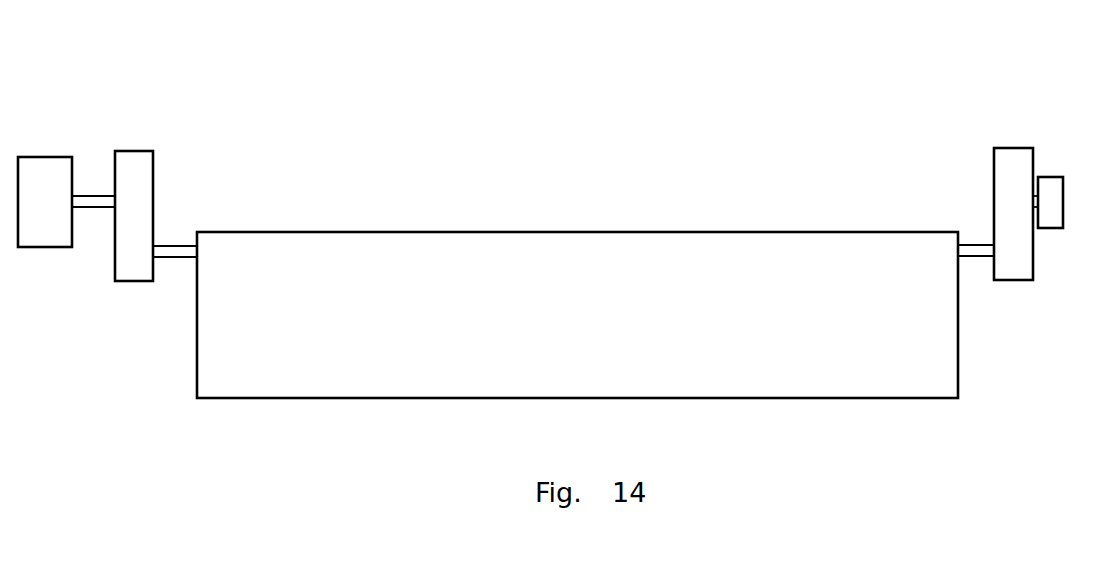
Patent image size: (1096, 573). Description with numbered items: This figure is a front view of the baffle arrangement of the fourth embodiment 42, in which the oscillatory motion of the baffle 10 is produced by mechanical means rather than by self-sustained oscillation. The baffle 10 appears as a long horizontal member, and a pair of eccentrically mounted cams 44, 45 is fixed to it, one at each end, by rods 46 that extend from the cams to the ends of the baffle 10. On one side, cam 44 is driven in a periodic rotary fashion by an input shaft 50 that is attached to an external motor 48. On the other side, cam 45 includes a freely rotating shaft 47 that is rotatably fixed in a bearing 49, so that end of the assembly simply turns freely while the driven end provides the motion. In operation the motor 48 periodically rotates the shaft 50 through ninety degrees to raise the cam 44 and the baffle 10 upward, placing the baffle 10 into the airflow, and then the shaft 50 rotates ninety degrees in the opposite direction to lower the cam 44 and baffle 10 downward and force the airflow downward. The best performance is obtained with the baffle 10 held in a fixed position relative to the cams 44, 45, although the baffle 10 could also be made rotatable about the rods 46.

The baffle 10 is at (208, 362).
The fourth embodiment 42 is at (506, 132).
The eccentrically mounted cam 44 is at (137, 283).
The eccentrically mounted cam 45 is at (1015, 287).
The rod 46 is at (172, 246).
The freely rotating shaft 47 is at (1037, 196).
The external motor 48 is at (38, 157).
The bearing 49 is at (1053, 177).
The input shaft 50 is at (100, 196).